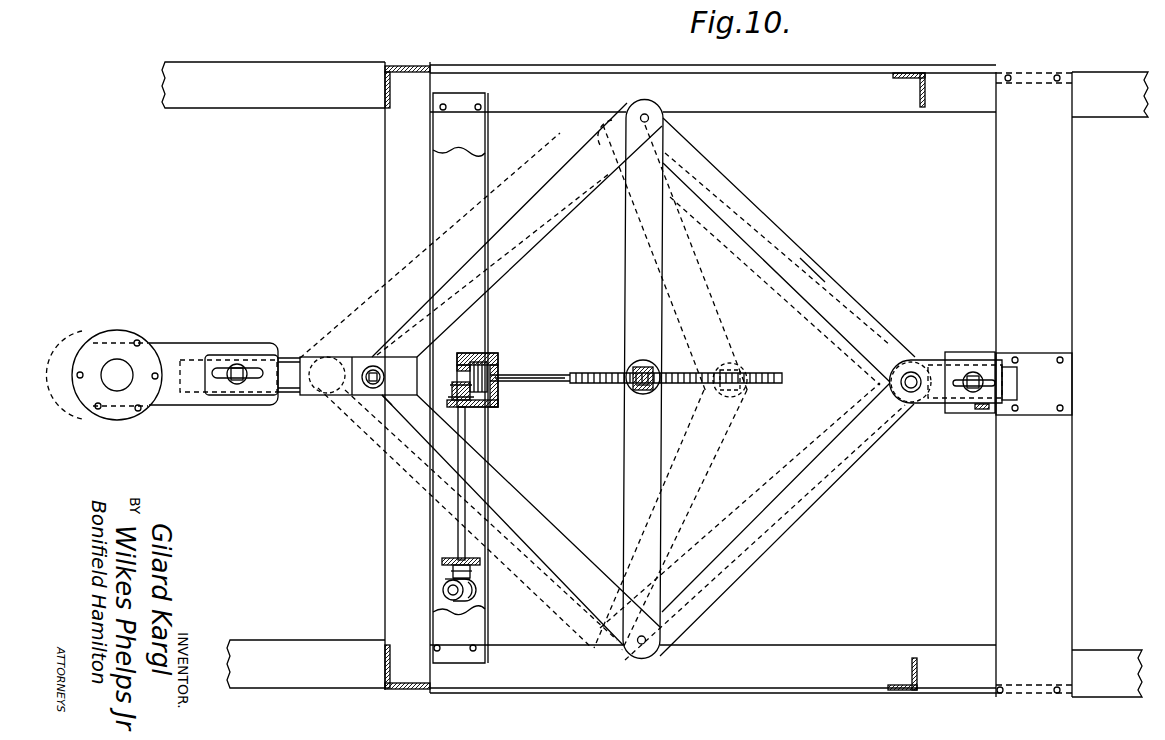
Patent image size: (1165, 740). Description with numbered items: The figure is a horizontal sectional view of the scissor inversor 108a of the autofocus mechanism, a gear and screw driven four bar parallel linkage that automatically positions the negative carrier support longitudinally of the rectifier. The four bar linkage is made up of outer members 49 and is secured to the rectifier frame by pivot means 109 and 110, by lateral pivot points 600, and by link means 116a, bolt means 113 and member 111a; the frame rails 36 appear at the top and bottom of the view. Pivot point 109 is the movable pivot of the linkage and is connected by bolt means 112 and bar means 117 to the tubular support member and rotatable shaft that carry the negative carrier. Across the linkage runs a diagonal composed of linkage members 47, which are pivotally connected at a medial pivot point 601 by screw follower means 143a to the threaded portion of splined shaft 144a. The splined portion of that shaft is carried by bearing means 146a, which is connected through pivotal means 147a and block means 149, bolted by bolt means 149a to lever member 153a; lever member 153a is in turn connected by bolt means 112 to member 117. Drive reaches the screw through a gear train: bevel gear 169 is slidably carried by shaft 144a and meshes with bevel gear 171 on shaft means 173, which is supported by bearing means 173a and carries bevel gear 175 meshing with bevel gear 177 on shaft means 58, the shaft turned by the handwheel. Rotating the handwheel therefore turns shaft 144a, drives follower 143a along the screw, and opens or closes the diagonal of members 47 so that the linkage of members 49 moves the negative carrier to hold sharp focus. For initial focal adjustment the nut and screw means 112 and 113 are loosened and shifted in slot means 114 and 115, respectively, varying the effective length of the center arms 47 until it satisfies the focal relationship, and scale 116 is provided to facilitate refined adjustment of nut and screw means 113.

The frame rail 36 is at (1092, 72).
The linkage members 47 is at (625, 293).
The members of four bar linkage 49 is at (527, 212).
The shaft means 58 is at (445, 595).
The four bar parallel linkage inversor means 108a is at (822, 260).
The pivot means 109 is at (352, 394).
The pivot means 110 is at (911, 375).
The member 111a is at (1032, 352).
The bolt means 112 is at (236, 365).
The bolt means 113 is at (972, 392).
The slot means 114 is at (257, 368).
The slot means 115 is at (973, 373).
The scale 116 is at (988, 410).
The link means 116a is at (912, 404).
The bar means 117 is at (173, 402).
The screw follower means 143a is at (655, 365).
The splined shaft 144a is at (566, 372).
The bearing means 146a is at (480, 352).
The pivotal means 147a is at (384, 410).
The block means 149 is at (362, 353).
The bolt means 149a is at (368, 383).
The lever member 153a is at (312, 362).
The bevel gear 169 is at (497, 397).
The bevel gear 171 is at (470, 405).
The shaft means 173 is at (465, 490).
The bearing means 173a is at (442, 560).
The bevel gear 175 is at (450, 570).
The bevel gear 177 is at (475, 590).
The lateral pivot points 600 is at (650, 118).
The medial pivot point 601 is at (635, 385).